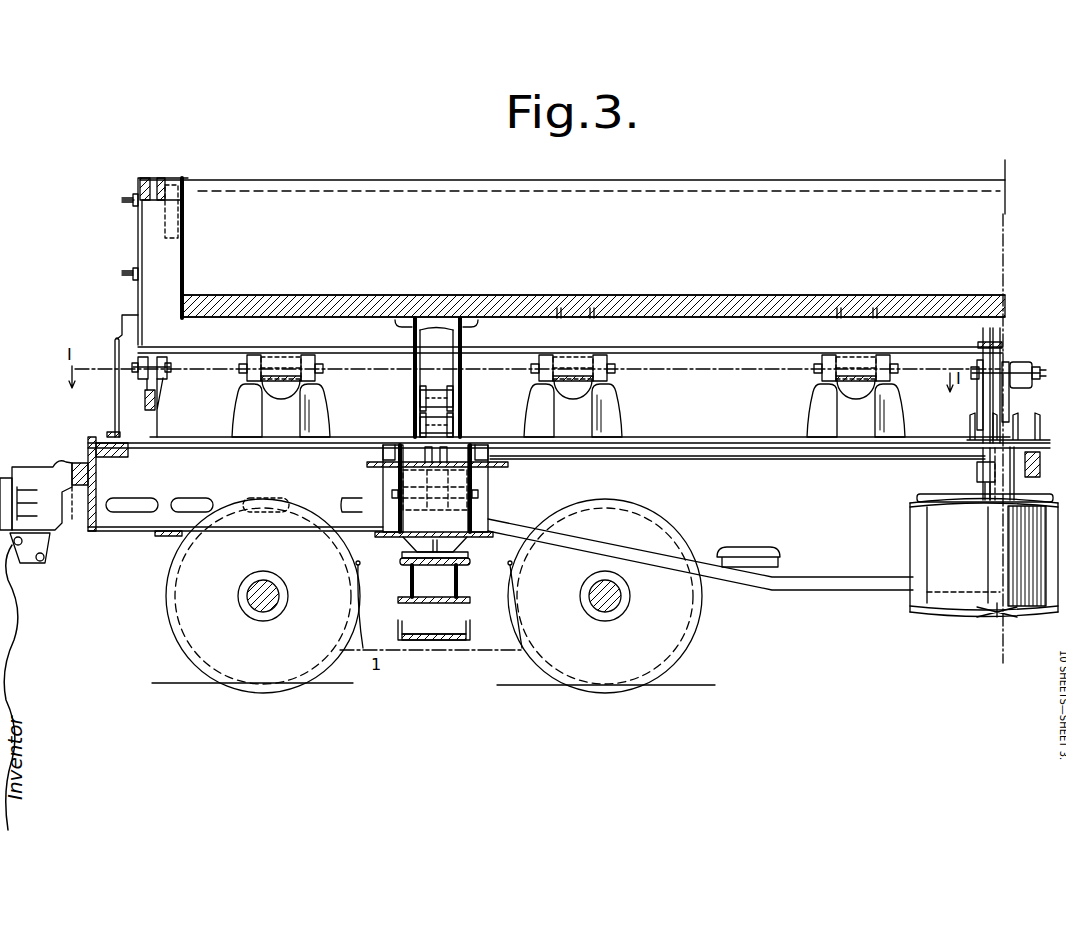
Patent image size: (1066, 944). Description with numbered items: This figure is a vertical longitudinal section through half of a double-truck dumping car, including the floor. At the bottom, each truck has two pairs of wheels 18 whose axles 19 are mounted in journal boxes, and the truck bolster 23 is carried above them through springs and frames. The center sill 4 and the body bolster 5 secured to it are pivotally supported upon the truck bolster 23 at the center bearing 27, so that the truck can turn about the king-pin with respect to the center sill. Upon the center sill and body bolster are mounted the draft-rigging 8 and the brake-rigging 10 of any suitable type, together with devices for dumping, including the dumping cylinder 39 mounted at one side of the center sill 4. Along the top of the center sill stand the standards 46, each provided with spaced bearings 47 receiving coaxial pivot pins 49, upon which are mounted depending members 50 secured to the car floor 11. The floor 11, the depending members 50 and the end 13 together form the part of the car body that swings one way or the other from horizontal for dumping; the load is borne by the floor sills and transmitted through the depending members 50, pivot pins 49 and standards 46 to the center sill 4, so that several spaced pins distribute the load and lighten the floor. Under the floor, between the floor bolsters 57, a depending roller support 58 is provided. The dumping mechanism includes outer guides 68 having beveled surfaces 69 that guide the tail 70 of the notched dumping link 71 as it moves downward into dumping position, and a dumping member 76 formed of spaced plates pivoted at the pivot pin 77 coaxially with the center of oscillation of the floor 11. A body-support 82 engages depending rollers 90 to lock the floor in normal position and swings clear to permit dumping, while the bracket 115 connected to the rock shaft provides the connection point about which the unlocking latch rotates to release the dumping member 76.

The center sill 4 is at (569, 513).
The bolster 5 is at (468, 512).
The draft-rigging 8 is at (42, 470).
The brake-rigging 10 is at (475, 650).
The floor 11 is at (703, 298).
The end 13 is at (143, 252).
The wheels 18 is at (643, 698).
The axles 19 is at (267, 610).
The truck bolster 23 is at (455, 578).
The center bearing 27 is at (403, 545).
The dumping cylinder 39 is at (984, 555).
The standard 46 is at (315, 408).
The bearings 47 is at (254, 356).
The pivot pin 49 is at (243, 368).
The depending member 50 is at (282, 358).
The floor bolster 57 is at (470, 335).
The roller support 58 is at (412, 405).
The outer guide 68 is at (976, 480).
The beveled surface 69 is at (987, 483).
The tail 70 is at (978, 474).
The dumping link 71 is at (990, 390).
The dumping member 76 is at (987, 400).
The pivot pin 77 is at (1037, 375).
The body-support 82 is at (382, 478).
The depending rollers 90 is at (430, 427).
The bracket 115 is at (1015, 482).